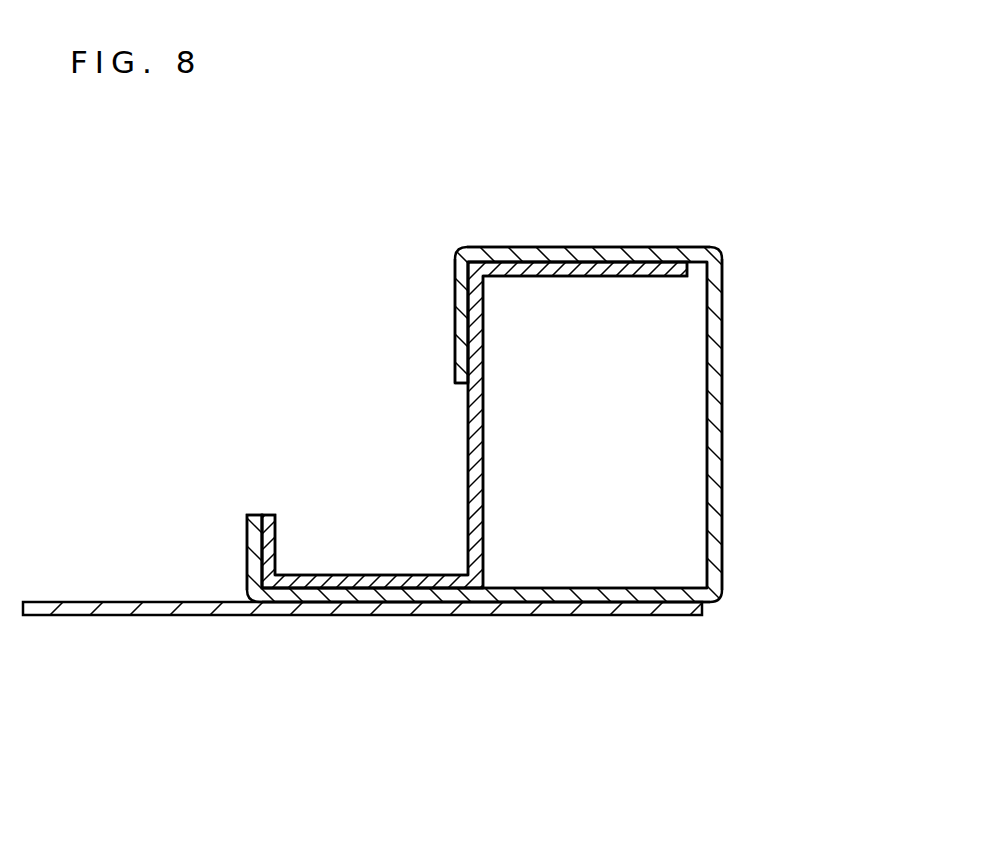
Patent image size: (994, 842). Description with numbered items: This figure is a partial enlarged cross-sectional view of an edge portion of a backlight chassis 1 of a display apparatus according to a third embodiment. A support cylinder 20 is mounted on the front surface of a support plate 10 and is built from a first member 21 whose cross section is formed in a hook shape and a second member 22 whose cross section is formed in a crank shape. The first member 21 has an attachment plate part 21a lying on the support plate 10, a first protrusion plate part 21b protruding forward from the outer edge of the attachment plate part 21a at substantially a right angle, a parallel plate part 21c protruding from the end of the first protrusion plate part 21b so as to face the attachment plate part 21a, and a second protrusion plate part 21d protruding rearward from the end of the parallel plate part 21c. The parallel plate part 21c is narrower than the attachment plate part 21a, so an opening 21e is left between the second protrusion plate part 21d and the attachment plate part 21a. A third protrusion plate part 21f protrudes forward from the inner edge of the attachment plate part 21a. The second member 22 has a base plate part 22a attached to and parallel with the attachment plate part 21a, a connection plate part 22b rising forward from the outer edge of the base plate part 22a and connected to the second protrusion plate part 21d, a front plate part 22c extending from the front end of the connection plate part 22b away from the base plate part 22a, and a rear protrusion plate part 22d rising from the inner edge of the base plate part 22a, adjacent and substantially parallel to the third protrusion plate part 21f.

The backlight chassis 1 is at (766, 159).
The support plate 10 is at (652, 607).
The support cylinder 20 is at (609, 211).
The first member 21 is at (724, 313).
The attachment plate part 21a is at (532, 595).
The first protrusion plate part 21b is at (712, 452).
The parallel plate part 21c is at (548, 253).
The second protrusion plate part 21d is at (462, 305).
The opening 21e is at (463, 384).
The third protrusion plate part 21f is at (250, 568).
The second member 22 is at (446, 465).
The base plate part 22a is at (322, 582).
The connection plate part 22b is at (476, 544).
The front plate part 22c is at (663, 268).
The rear protrusion plate part 22d is at (268, 517).